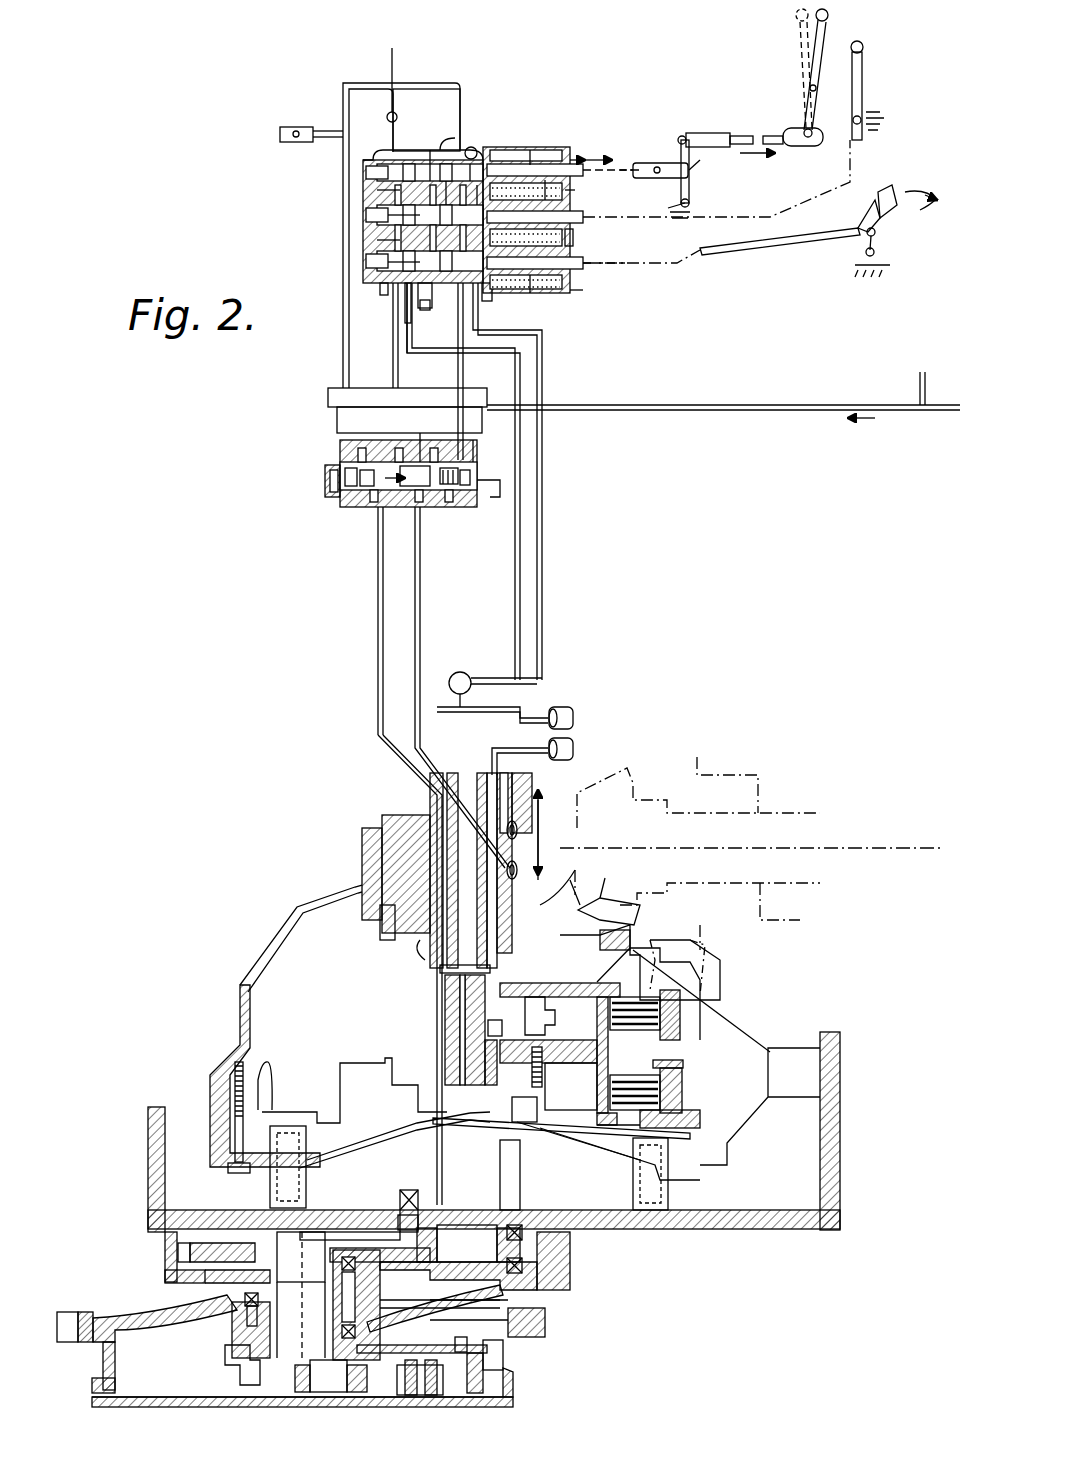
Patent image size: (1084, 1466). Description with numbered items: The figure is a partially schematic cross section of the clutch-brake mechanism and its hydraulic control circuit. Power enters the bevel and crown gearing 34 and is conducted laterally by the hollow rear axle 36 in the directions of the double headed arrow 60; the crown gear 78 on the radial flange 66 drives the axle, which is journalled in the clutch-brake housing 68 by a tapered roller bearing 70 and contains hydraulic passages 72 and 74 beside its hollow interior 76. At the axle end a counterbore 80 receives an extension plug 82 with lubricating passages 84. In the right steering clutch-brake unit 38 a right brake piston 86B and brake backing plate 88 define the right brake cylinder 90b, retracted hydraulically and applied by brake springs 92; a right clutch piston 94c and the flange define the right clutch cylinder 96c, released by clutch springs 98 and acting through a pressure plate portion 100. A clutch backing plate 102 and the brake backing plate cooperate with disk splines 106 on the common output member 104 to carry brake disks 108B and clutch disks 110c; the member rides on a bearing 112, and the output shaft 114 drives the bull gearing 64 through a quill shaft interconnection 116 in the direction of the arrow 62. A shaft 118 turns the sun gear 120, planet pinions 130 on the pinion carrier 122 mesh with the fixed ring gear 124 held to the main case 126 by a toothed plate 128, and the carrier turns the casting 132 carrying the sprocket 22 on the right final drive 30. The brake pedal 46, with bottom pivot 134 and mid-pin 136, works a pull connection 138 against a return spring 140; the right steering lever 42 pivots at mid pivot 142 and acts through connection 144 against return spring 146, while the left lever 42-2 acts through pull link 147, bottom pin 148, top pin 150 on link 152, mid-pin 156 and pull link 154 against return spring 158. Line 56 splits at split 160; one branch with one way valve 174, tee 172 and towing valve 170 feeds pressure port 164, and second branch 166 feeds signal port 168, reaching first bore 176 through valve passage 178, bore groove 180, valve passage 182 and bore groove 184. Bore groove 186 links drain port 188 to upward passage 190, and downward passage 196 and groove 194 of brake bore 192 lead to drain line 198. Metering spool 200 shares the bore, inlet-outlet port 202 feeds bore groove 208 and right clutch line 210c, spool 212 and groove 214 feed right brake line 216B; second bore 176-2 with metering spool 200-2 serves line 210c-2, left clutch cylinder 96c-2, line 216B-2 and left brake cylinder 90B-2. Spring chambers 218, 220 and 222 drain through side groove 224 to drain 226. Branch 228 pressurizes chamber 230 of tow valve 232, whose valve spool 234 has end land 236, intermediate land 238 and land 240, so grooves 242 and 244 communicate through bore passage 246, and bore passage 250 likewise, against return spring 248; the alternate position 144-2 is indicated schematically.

The right track drive sprocket 22 is at (545, 1315).
The right final drive 30 is at (505, 1395).
The bevel and crown gearing 34 is at (612, 905).
The rear axle 36 is at (375, 900).
The right steering clutch-brake unit 38 is at (842, 1222).
The right steering lever 42 is at (865, 45).
The left steering lever 42-2 is at (834, 20).
The brake pedal 46 is at (885, 190).
The line 56 is at (343, 95).
The double headed arrow 60 is at (540, 830).
The arrow 62 is at (520, 1125).
The bull gearing 64 is at (410, 1215).
The radial flange 66 is at (518, 870).
The clutch-brake housing 68 is at (372, 898).
The tapered roller bearing 70 is at (390, 930).
The right axle hydraulic passage 72 is at (495, 888).
The left axle hydraulic passage 74 is at (505, 772).
The hollow interior 76 is at (428, 958).
The crown gear 78 is at (625, 935).
The counterbore 80 is at (460, 1017).
The extension plug 82 is at (455, 1048).
The lubricating passages 84 is at (473, 1067).
The right brake piston 86B is at (596, 1113).
The brake backing plate 88 is at (685, 1095).
The right brake cylinder 90b is at (668, 1140).
The left brake cylinder 90B-2 is at (565, 706).
The brake springs 92 is at (658, 1212).
The right clutch piston 94c is at (560, 1009).
The right clutch cylinder 96c is at (564, 894).
The left clutch cylinder 96c-2 is at (573, 748).
The clutch springs 98 is at (548, 1056).
The pressure plate portion 100 is at (675, 982).
The clutch backing plate 102 is at (675, 1020).
The clutch-brake output member 104 is at (571, 1086).
The disk splines 106 is at (608, 1060).
The brake disks 108B is at (660, 1085).
The clutch disks 110c is at (660, 1005).
The bearing 112 is at (485, 1038).
The clutch brake output shaft 114 is at (522, 1165).
The quill shaft interconnection 116 is at (535, 1210).
The shaft 118 is at (262, 1340).
The sun gear 120 is at (335, 1375).
The pinion carrier 122 is at (505, 1355).
The ring gear 124 is at (450, 1372).
The fixed main case 126 is at (322, 1280).
The toothed plate 128 is at (418, 1338).
The planet pinions 130 is at (335, 1340).
The rotationally supported casting 132 is at (455, 1300).
The bottom pivot 134 is at (870, 268).
The mid-pin 136 is at (878, 238).
The pull connection 138 is at (702, 256).
The spool valve return spring 140 is at (612, 272).
The mid pivot 142 is at (863, 110).
The connection 144 is at (612, 212).
The linkage position 144-2 is at (572, 155).
The spool valve return spring 146 is at (598, 186).
The pull link 147 is at (762, 134).
The bottom pin 148 is at (583, 270).
The top pin 150 is at (683, 136).
The bottom-pivoted link 152 is at (690, 182).
The pull link 154 is at (670, 163).
The mid-pin 156 is at (692, 165).
The spool valve return spring 158 is at (565, 148).
The split 160 is at (405, 88).
The pressure port 164 is at (372, 143).
The second branch 166 is at (470, 140).
The signal pressure port 168 is at (478, 148).
The one way towing valve 170 is at (288, 126).
The tee connection 172 is at (388, 120).
The one way valve 174 is at (389, 110).
The first bore 176 is at (366, 215).
The second bore 176-2 is at (366, 172).
The valve passage 178 is at (380, 190).
The bore groove 180 is at (388, 220).
The valve passage 182 is at (472, 165).
The bore groove 184 is at (478, 190).
The bore groove 186 is at (446, 180).
The drain port 188 is at (443, 310).
The upwardly directed passage 190 is at (430, 163).
The brake valve bore 192 is at (366, 260).
The bore groove 194 is at (390, 268).
The downwardly extending passage 196 is at (463, 481).
The drain line 198 is at (406, 320).
The metering spool 200 is at (377, 203).
The metering spool 200-2 is at (432, 148).
The inlet-outlet port 202 is at (385, 238).
The bore groove 208 is at (393, 283).
The right clutch line 210c is at (378, 648).
The second clutch line 210c-2 is at (420, 622).
The spool 212 is at (378, 280).
The bore groove 214 is at (404, 300).
The right brake line 216B is at (523, 540).
The left brake line 216B-2 is at (545, 605).
The spring chamber 218 is at (531, 150).
The spring chamber 220 is at (545, 182).
The spring chamber 222 is at (532, 290).
The side groove 224 is at (572, 238).
The drain 226 is at (493, 292).
The branch 228 is at (345, 450).
The actuating pressure chamber 230 is at (348, 490).
The tow valve 232 is at (328, 497).
The valve spool 234 is at (418, 440).
The end land 236 is at (352, 425).
The intermediate land 238 is at (462, 440).
The land 240 is at (470, 470).
The bore groove 242 is at (440, 440).
The bore groove 244 is at (368, 492).
The bore passage 246 is at (382, 510).
The return spring 248 is at (470, 490).
The bore passage 250 is at (430, 490).